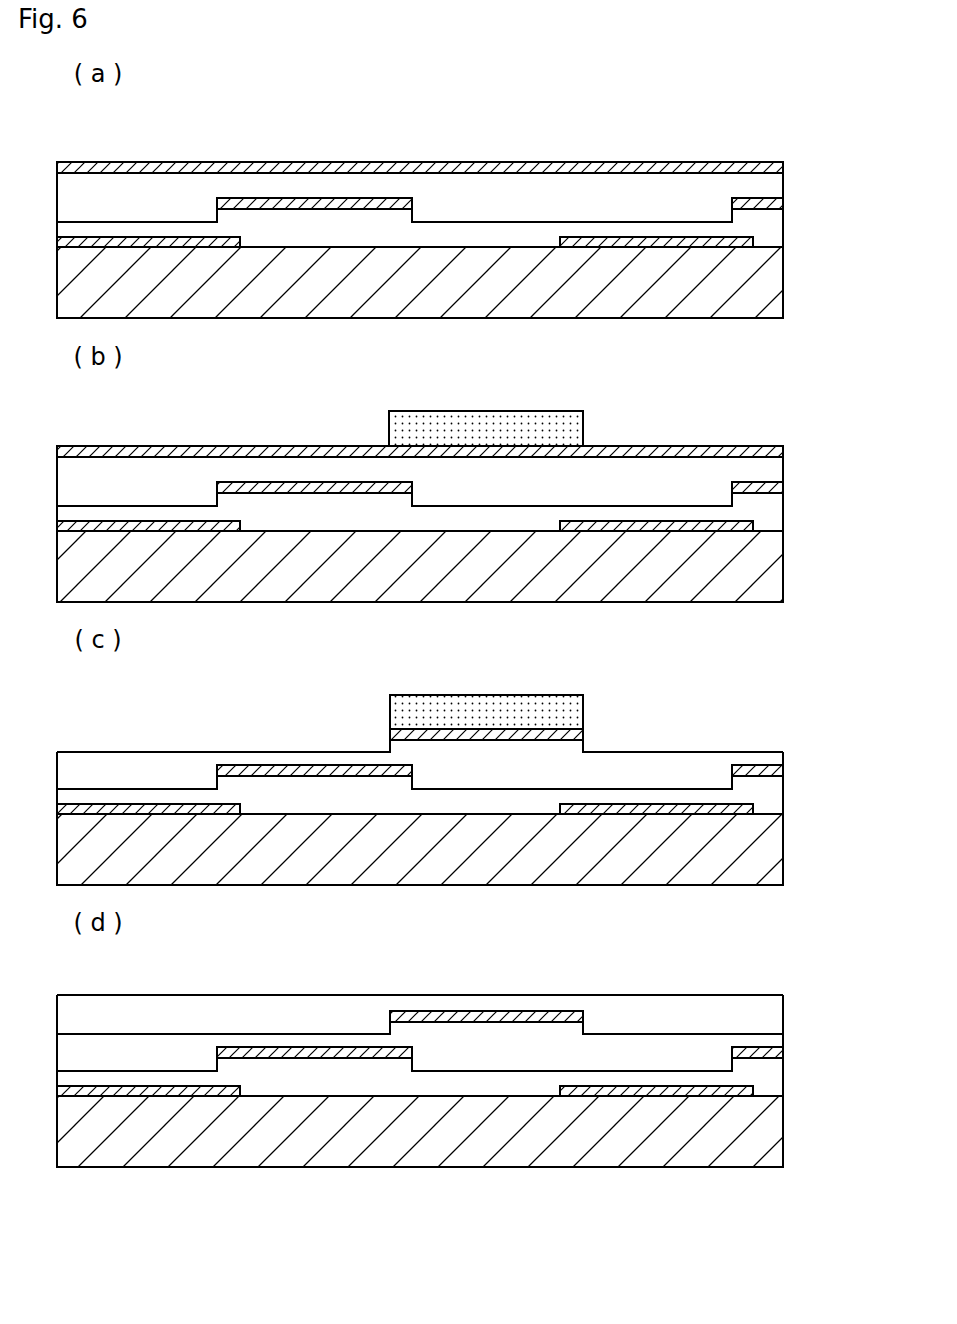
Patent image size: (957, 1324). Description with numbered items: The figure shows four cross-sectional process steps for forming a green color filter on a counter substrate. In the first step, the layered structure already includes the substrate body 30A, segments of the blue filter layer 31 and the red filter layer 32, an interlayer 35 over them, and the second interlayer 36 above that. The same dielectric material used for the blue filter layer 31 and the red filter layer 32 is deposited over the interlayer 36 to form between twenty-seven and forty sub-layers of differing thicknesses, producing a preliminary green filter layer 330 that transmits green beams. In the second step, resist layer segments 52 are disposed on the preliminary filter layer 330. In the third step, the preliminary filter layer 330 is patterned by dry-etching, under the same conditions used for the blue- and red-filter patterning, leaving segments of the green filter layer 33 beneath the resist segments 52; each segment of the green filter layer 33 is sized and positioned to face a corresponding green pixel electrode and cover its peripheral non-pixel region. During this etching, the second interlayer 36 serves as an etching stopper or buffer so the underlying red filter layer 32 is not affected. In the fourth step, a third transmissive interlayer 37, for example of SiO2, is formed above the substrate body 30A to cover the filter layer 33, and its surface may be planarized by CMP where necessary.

The substrate body 30A is at (755, 280).
The blue filter layer 31 is at (155, 237).
The red filter layer 32 is at (272, 198).
The green filter layer 33 is at (390, 733).
The interlayer 35 is at (768, 223).
The second interlayer 36 is at (637, 195).
The third transmissive interlayer 37 is at (677, 1003).
The resist layer segments 52 is at (493, 422).
The preliminary green filter layer 330 is at (745, 168).